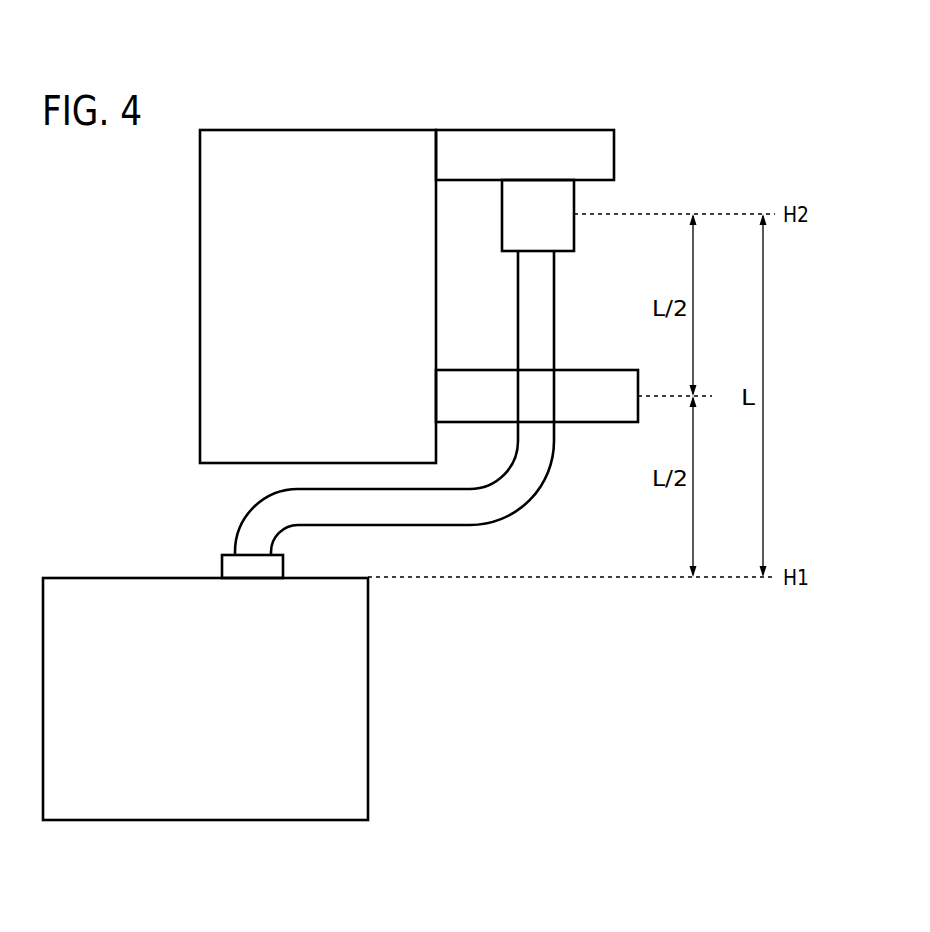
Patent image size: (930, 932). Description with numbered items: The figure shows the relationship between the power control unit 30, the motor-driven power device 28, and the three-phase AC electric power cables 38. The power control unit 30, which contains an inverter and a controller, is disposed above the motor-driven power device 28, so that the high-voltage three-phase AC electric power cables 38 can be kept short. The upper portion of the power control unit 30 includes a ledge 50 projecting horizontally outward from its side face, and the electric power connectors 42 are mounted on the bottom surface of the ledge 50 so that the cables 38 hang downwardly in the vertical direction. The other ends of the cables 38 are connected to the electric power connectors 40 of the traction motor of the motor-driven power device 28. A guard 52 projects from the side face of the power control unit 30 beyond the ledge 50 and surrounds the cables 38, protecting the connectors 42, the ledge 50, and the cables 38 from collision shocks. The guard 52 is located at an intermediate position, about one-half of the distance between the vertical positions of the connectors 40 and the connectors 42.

The motor-driven power device 28 is at (356, 662).
The power control unit 30 is at (345, 138).
The three-phase AC electric power cables 38 is at (528, 482).
The electric power connectors 40 is at (222, 564).
The electric power connectors 42 is at (557, 235).
The ledge 50 is at (531, 140).
The guard 52 is at (610, 369).